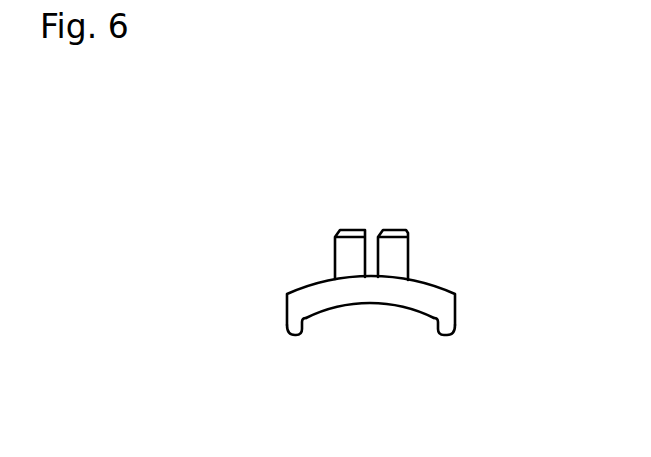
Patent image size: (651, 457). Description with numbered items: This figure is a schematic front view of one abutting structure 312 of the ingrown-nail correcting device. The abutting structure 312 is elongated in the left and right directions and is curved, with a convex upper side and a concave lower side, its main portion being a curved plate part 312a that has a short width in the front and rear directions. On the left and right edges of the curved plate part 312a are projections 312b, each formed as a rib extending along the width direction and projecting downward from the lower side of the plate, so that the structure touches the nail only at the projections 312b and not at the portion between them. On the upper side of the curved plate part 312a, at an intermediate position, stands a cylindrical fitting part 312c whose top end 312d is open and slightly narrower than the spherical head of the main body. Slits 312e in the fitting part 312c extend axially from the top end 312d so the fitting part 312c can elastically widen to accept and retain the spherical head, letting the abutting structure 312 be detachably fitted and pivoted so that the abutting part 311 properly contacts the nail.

The abutting part 311 is at (370, 298).
The abutting structure 312 is at (452, 231).
The curved plate part 312a is at (425, 314).
The projections 312b is at (293, 338).
The fitting part 312c is at (335, 260).
The top end of the cylindrical shape 312d is at (393, 226).
The slits 312e is at (373, 235).